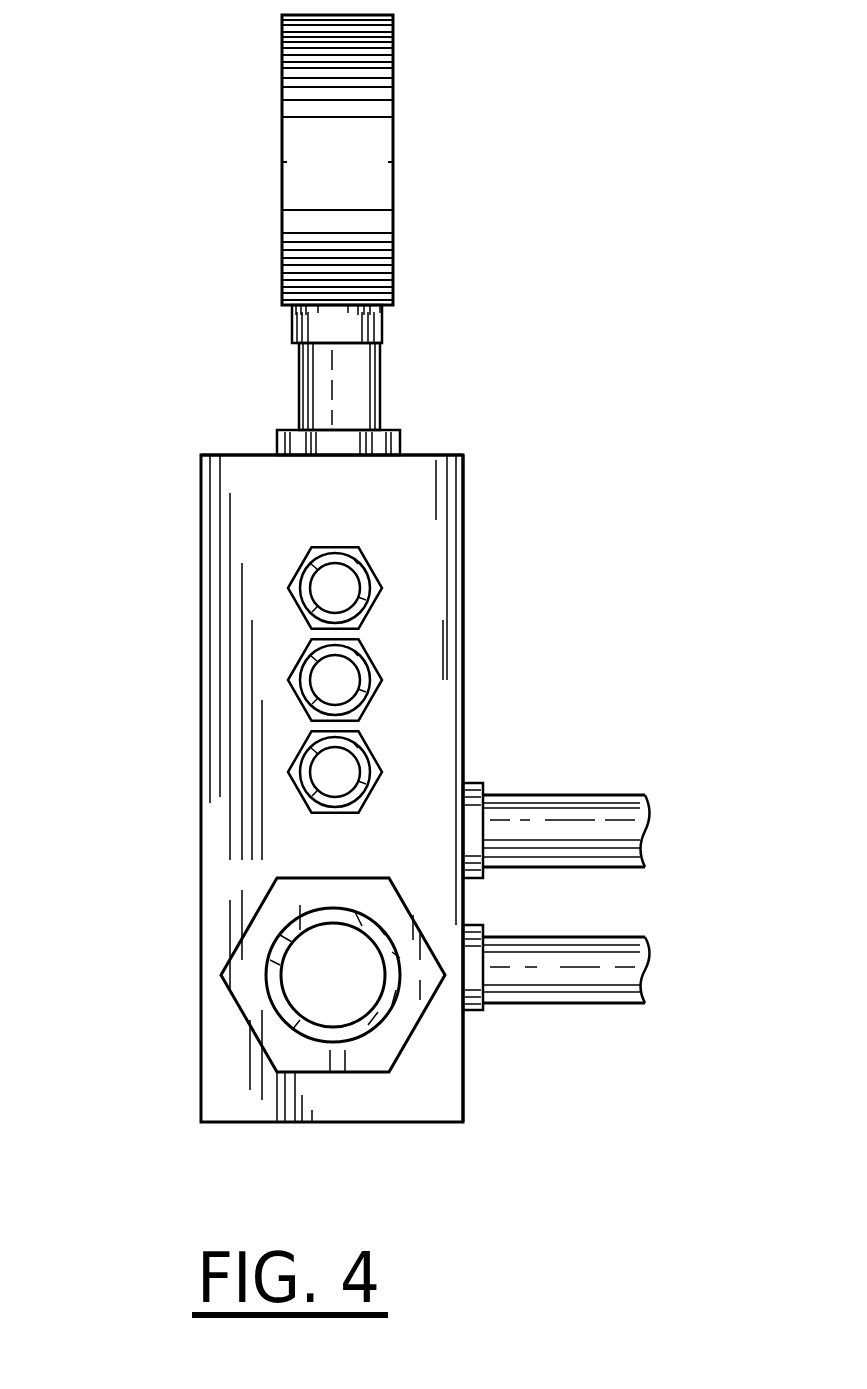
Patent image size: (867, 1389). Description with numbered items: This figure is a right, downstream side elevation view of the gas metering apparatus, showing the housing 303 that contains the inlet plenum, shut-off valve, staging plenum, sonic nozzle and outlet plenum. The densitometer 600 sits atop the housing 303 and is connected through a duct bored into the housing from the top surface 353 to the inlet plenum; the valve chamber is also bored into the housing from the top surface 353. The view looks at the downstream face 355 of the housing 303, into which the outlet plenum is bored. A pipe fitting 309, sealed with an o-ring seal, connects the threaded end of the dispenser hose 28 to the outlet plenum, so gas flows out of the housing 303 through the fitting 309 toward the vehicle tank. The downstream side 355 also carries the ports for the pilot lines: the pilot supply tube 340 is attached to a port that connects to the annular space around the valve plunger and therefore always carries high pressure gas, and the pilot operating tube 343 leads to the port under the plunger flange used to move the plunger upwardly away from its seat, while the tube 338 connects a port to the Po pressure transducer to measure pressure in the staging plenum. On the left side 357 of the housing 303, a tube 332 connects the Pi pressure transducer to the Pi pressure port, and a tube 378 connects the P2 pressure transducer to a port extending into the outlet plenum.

The densitometer 600 is at (394, 204).
The housing 303 is at (227, 455).
The top surface 353 is at (440, 455).
The left side 357 is at (465, 505).
The downstream face 355 is at (357, 520).
The pilot operating tube 343 is at (290, 585).
The pilot supply tube 340 is at (290, 678).
The tube 338 is at (290, 770).
The pipe fitting 309 is at (240, 940).
The dispenser hose 28 is at (270, 1013).
The tube 332 is at (575, 795).
The tube 378 is at (590, 937).